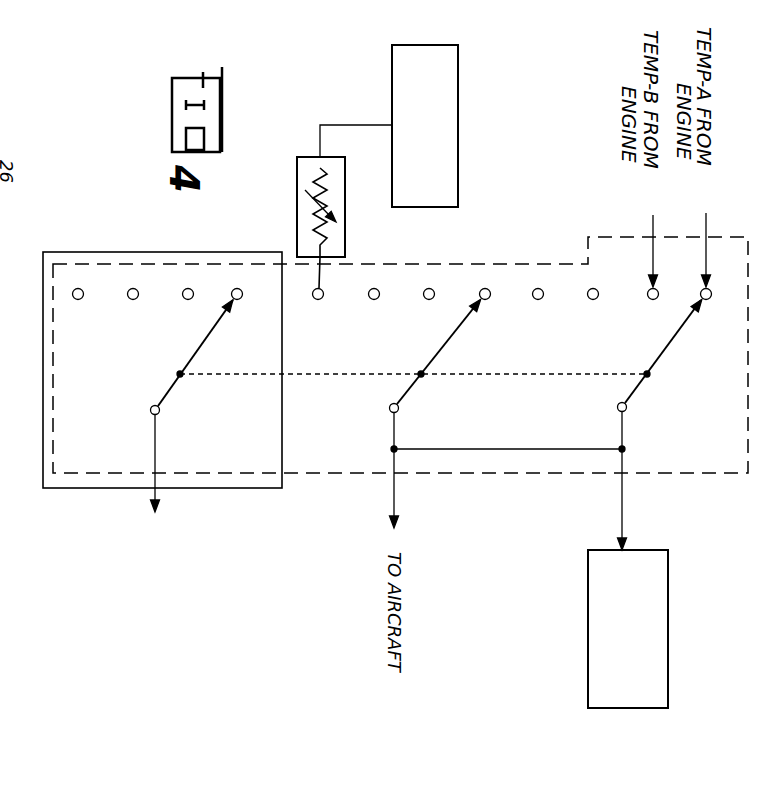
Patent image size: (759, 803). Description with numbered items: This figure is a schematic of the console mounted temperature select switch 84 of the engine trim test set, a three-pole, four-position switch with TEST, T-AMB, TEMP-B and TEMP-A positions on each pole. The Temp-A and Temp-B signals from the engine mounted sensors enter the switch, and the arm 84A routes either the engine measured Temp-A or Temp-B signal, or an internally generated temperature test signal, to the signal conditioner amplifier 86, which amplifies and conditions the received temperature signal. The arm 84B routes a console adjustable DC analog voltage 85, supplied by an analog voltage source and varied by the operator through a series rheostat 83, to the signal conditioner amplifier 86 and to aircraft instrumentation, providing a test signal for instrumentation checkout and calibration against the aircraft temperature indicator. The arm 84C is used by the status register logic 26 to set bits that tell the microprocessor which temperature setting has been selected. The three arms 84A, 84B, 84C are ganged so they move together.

The status register logic 26 is at (263, 488).
The potentiometer 83 is at (358, 204).
The temperature select switch 84 is at (705, 470).
The switch arm 84A is at (657, 362).
The switch arm 84B is at (405, 393).
The switch arm 84C is at (166, 390).
The console adjustable DC analog voltage 85 is at (460, 157).
The signal conditioner amplifier 86 is at (668, 632).